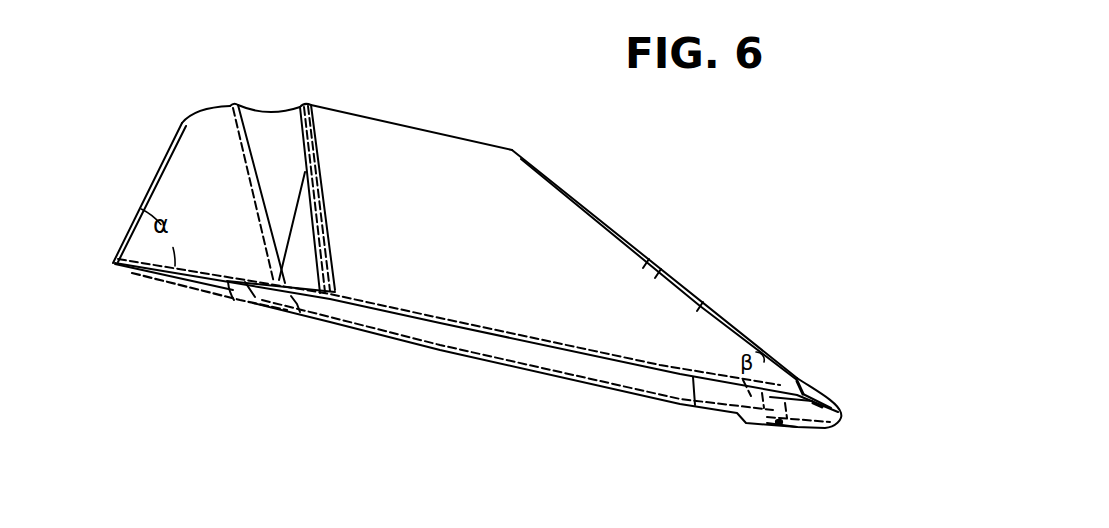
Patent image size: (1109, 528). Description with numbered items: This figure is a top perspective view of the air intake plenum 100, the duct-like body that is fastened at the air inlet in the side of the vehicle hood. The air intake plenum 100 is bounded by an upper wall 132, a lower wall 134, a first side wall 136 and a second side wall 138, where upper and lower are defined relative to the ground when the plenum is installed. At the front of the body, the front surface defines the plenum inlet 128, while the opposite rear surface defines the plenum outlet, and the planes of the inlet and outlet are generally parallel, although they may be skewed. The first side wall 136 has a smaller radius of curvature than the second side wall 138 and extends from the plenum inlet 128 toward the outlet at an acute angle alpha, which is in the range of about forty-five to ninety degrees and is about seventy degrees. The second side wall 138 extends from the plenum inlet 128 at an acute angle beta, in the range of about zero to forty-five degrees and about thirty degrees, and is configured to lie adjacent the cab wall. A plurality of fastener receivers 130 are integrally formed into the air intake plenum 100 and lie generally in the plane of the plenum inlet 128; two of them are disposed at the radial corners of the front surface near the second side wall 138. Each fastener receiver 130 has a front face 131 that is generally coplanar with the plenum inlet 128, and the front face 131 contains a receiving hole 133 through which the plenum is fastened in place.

The air intake plenum 100 is at (522, 247).
The plenum inlet 128 is at (566, 364).
The fastener receiver 130 is at (803, 428).
The front face 131 is at (757, 424).
The upper wall 132 is at (417, 240).
The receiving hole 133 is at (779, 426).
The lower wall 134 is at (478, 338).
The first side wall 136 is at (146, 242).
The second side wall 138 is at (758, 362).